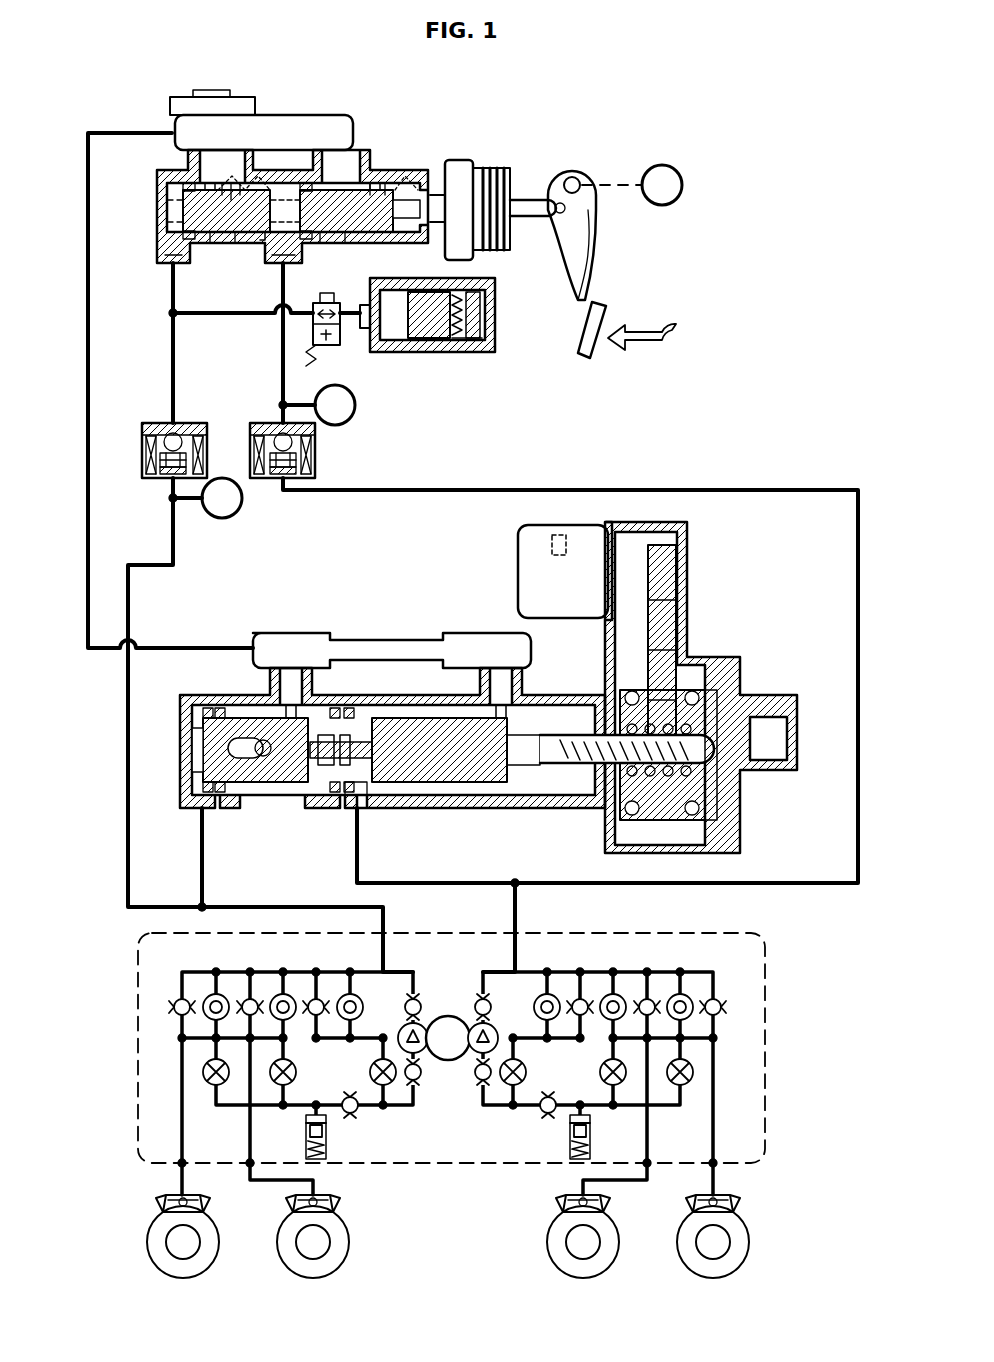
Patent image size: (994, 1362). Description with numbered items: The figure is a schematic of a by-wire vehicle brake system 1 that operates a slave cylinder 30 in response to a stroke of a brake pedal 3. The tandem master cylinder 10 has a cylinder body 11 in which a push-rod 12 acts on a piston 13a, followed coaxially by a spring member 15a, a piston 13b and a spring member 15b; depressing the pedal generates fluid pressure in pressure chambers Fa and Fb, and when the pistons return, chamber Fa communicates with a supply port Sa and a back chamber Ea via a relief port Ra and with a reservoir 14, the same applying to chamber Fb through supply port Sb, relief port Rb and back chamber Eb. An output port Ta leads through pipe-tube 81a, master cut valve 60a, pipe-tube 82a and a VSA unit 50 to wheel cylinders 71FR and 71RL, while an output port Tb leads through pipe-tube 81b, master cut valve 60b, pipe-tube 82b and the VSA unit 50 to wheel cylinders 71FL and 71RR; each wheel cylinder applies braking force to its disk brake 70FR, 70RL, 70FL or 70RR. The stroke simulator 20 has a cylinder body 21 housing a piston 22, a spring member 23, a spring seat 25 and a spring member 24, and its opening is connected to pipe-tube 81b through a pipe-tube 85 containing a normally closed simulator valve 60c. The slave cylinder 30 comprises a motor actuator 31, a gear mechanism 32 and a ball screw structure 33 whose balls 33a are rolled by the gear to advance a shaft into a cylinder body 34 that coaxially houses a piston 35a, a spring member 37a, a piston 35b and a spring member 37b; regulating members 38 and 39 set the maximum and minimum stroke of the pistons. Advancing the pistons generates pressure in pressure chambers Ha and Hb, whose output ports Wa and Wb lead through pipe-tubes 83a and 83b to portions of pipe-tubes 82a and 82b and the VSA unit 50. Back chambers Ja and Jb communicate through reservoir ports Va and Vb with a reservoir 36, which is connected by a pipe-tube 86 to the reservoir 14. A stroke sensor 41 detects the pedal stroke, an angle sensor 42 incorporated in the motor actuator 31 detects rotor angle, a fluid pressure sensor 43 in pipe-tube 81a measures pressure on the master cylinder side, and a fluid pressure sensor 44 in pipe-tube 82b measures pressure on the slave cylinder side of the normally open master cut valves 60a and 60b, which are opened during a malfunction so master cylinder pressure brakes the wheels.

The vehicle brake system 1 is at (612, 132).
The brake pedal 3 is at (606, 305).
The master cylinder 10 is at (336, 175).
The cylinder body 11 is at (412, 170).
The push-rod 12 is at (455, 180).
The piston 13a is at (378, 183).
The piston 13b is at (212, 183).
The reservoir 14 is at (258, 115).
The spring member 15a is at (290, 183).
The spring member 15b is at (178, 183).
The stroke simulator 20 is at (555, 300).
The cylinder body 21 is at (485, 340).
The piston 22 is at (432, 340).
The spring member 23 is at (455, 340).
The spring member 24 is at (475, 345).
The spring seat 25 is at (454, 336).
The slave cylinder 30 is at (636, 687).
The motor actuator 31 is at (518, 565).
The gear mechanism 32 is at (700, 630).
The ball screw structure 33 is at (735, 745).
The balls 33a is at (735, 718).
The cylinder body 34 is at (572, 660).
The piston 35a is at (472, 795).
The piston 35b is at (275, 795).
The reservoir 36 is at (468, 633).
The spring member 37a is at (345, 708).
The spring member 37b is at (208, 708).
The regulating member 38 is at (360, 745).
The regulating member 39 is at (260, 740).
The stroke sensor 41 is at (683, 185).
The angle sensor 42 is at (552, 542).
The fluid pressure sensor 43 is at (355, 405).
The fluid pressure sensor 44 is at (226, 518).
The VSA unit 50 is at (695, 935).
The master cut valve 60a is at (315, 458).
The master cut valve 60b is at (190, 423).
The simulator valve 60c is at (303, 345).
The disk brake 70FL is at (155, 1262).
The disk brake 70RR is at (345, 1262).
The disk brake 70RL is at (555, 1262).
The disk brake 70FR is at (745, 1262).
The wheel cylinder 71FL is at (200, 1212).
The wheel cylinder 71RR is at (330, 1212).
The wheel cylinder 71RL is at (600, 1212).
The wheel cylinder 71FR is at (730, 1212).
The pipe-tube 81a is at (283, 358).
The pipe-tube 81b is at (173, 358).
The pipe-tube 82a is at (810, 490).
The pipe-tube 82b is at (128, 684).
The pipe-tube 83a is at (490, 883).
The pipe-tube 83b is at (202, 865).
The pipe-tube 85 is at (208, 313).
The pipe-tube 86 is at (88, 165).
The pressure chamber Fa is at (285, 190).
The pressure chamber Fb is at (170, 212).
The supply port Sa is at (372, 183).
The supply port Sb is at (233, 183).
The relief port Ra is at (315, 183).
The relief port Rb is at (200, 183).
The output port Ta is at (285, 268).
The output port Tb is at (170, 268).
The back chamber Ea is at (365, 232).
The back chamber Eb is at (224, 243).
The reservoir port Va is at (503, 668).
The reservoir port Vb is at (291, 705).
The pressure chamber Ha is at (350, 782).
The pressure chamber Hb is at (192, 745).
The back chamber Ja is at (438, 782).
The back chamber Jb is at (262, 782).
The output port Wa is at (357, 808).
The output port Wb is at (205, 808).